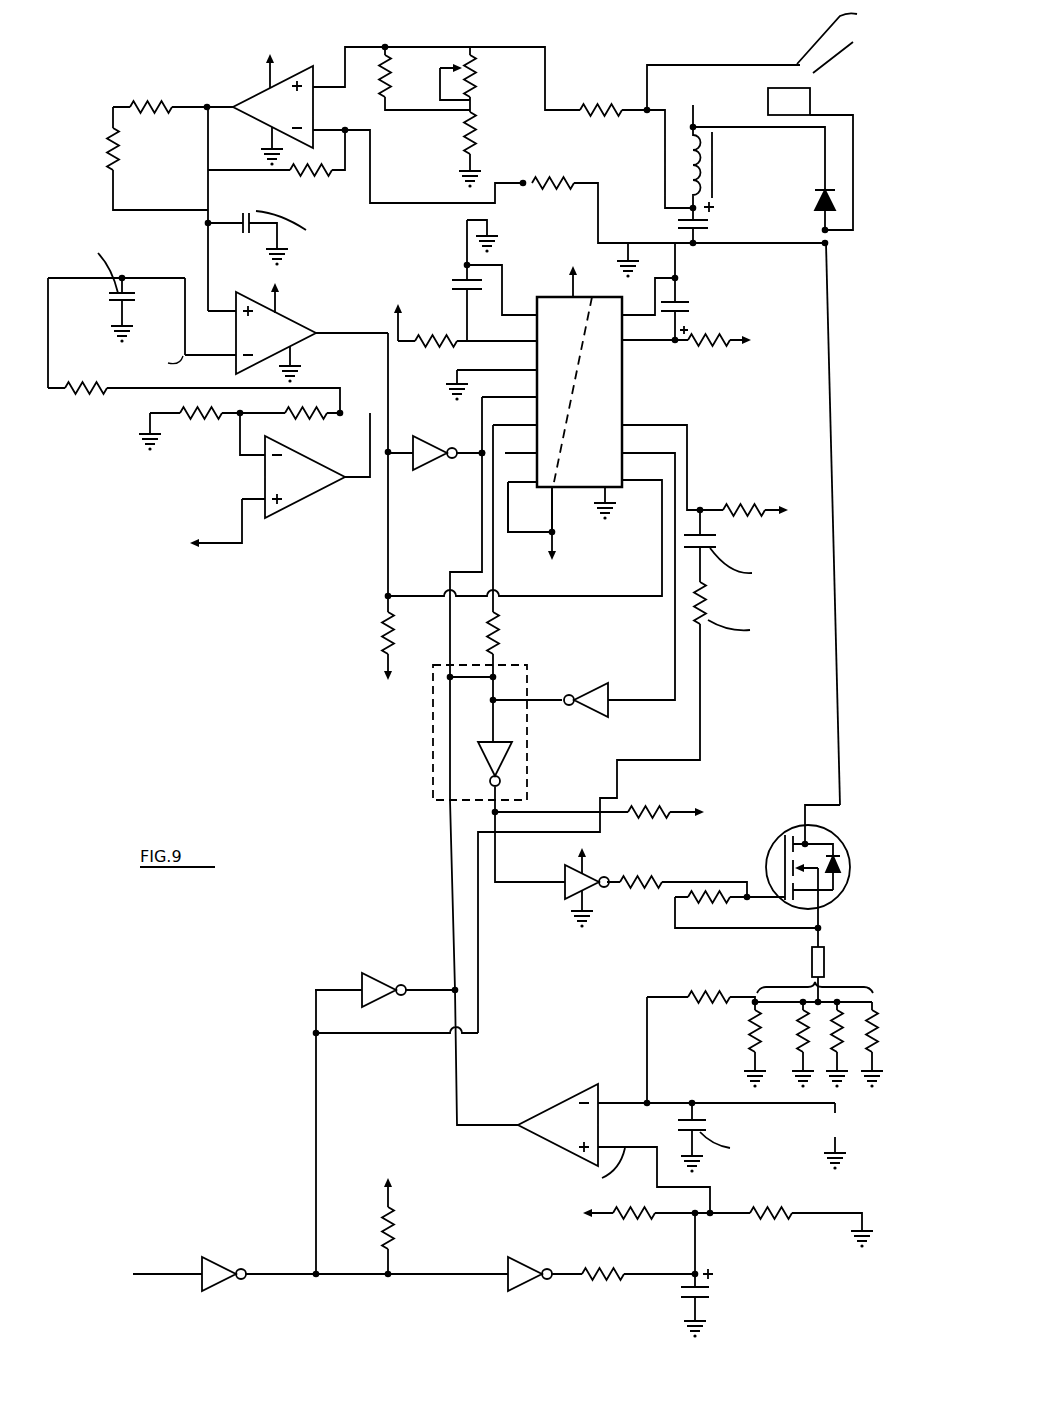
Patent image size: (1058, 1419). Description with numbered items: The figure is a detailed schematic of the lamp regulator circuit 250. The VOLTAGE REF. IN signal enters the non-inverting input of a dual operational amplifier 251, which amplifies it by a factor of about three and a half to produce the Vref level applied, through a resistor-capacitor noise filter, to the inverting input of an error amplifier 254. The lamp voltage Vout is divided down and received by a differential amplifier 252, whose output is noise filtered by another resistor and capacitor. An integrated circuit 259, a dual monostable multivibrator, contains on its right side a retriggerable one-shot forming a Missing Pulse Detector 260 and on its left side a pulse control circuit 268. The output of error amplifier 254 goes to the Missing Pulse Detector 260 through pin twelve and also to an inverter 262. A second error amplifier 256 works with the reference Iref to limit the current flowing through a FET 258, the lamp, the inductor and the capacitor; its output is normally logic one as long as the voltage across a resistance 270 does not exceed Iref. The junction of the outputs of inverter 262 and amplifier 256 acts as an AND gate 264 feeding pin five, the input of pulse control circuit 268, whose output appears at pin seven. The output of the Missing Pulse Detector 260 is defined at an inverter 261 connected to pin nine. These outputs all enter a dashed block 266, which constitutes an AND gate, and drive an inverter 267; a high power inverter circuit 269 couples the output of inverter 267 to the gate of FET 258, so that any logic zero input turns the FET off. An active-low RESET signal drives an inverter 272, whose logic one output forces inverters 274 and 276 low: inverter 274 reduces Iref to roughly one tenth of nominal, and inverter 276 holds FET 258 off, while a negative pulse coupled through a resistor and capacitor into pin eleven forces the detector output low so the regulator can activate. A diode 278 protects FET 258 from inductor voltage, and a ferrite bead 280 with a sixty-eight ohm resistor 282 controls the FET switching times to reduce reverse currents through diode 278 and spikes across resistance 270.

The lamp regulator circuit 250 is at (220, 651).
The dual operational amplifier 251 is at (283, 512).
The differential amplifier 252 is at (259, 84).
The error amplifier 254 is at (300, 343).
The error amplifier 256 is at (557, 1102).
The FET 258 is at (818, 828).
The integrated circuit 259 is at (624, 381).
The Missing Pulse Detector 260 is at (610, 470).
The inverter 261 is at (588, 686).
The inverter 262 is at (428, 468).
The AND gate 264 is at (478, 446).
The block 266 is at (433, 760).
The inverter 267 is at (505, 758).
The pulse control circuit 268 is at (576, 326).
The high power inverter circuit 269 is at (563, 887).
The resistance 270 is at (814, 1008).
The inverter 272 is at (218, 1260).
The inverter 274 is at (510, 1258).
The inverter 276 is at (380, 973).
The diode 278 is at (822, 190).
The ferrite bead 280 is at (830, 958).
The 68 ohm resistor 282 is at (645, 875).